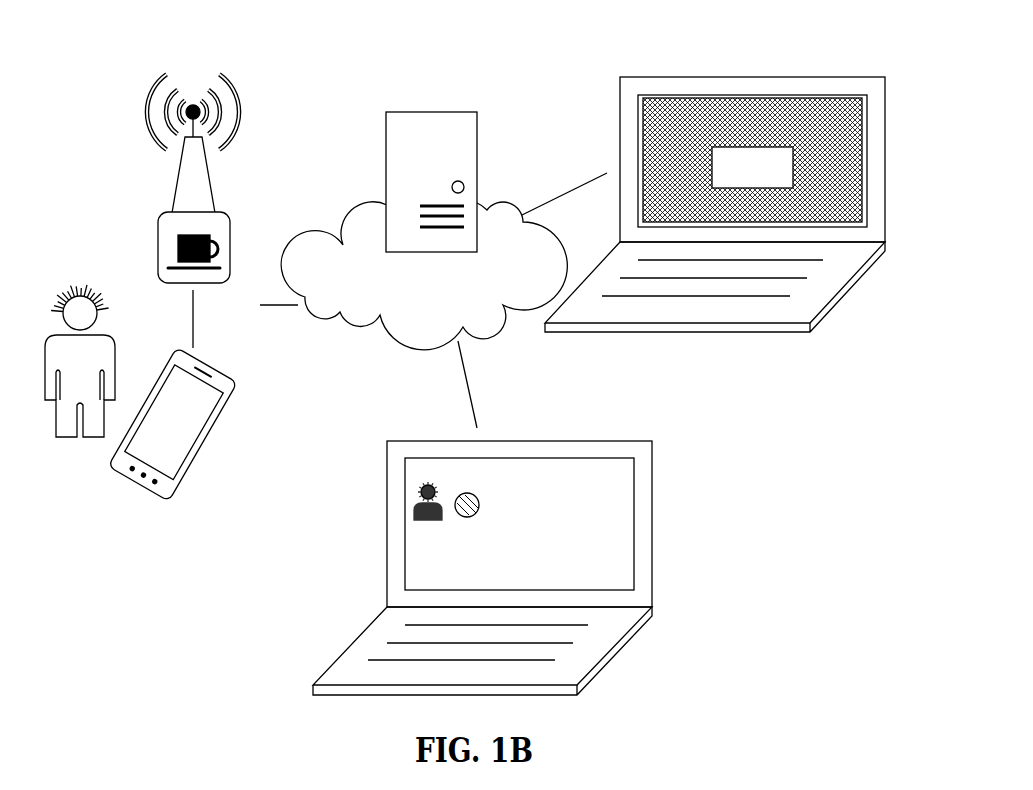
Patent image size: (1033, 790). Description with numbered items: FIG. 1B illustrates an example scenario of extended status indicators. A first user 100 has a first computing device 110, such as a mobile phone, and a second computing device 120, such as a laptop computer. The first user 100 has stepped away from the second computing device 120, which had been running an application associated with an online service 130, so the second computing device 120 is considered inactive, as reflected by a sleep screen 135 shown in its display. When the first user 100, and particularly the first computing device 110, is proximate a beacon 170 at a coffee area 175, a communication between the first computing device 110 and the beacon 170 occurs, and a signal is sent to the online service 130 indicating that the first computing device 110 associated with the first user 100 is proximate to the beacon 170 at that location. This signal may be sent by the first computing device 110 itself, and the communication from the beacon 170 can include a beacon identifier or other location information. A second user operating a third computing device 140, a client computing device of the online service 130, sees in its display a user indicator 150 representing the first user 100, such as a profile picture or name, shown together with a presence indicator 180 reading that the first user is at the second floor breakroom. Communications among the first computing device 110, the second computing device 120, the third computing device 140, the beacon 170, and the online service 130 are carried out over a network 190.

The first user 100 is at (70, 288).
The first computing device 110 is at (210, 442).
The second computing device 120 is at (705, 77).
The online service 130 is at (387, 147).
The sleep screen 135 is at (752, 160).
The third computing device 140 is at (652, 520).
The user indicator 150 is at (447, 475).
The beacon 170 is at (150, 170).
The coffee area 175 is at (231, 260).
The presence indicator 180 is at (587, 476).
The network 190 is at (433, 300).